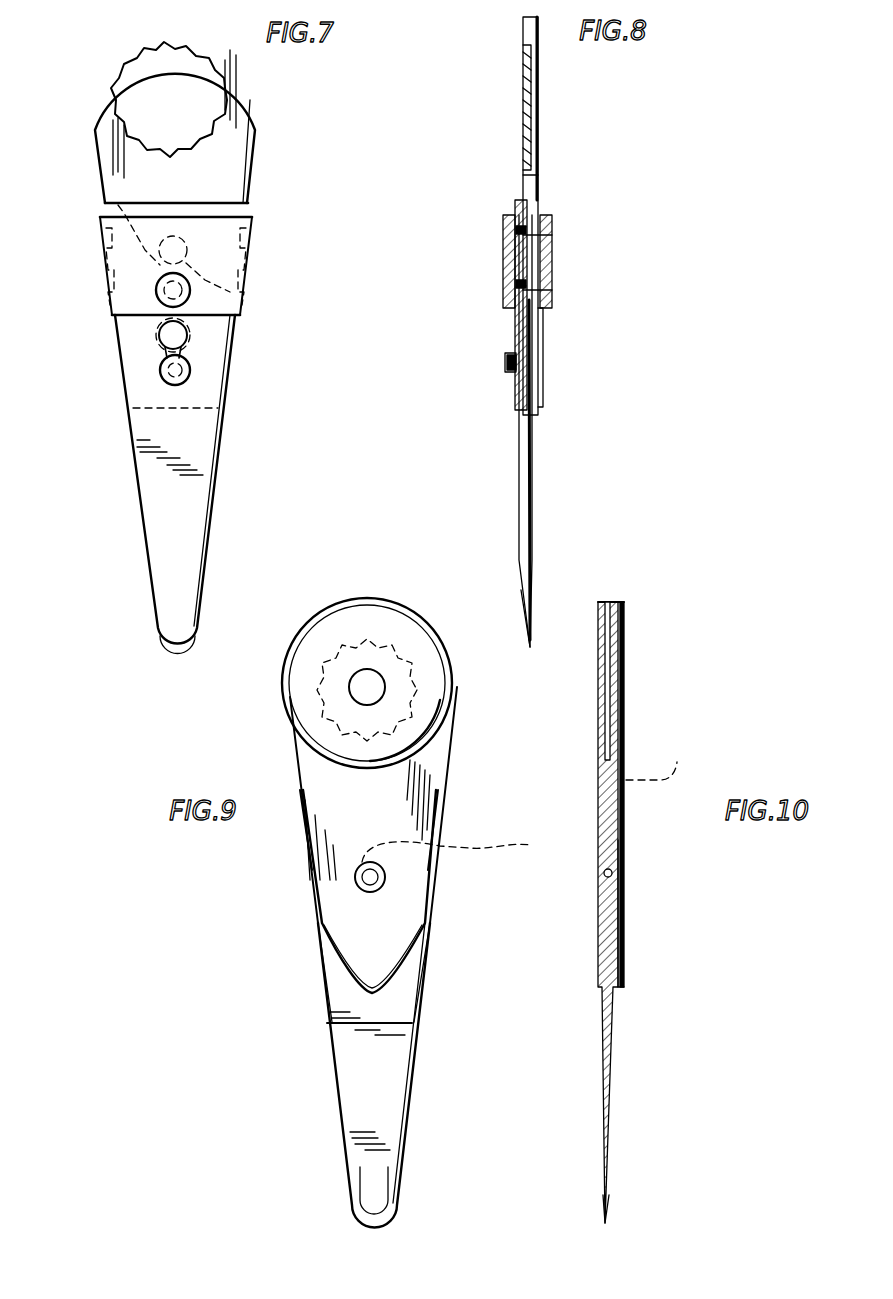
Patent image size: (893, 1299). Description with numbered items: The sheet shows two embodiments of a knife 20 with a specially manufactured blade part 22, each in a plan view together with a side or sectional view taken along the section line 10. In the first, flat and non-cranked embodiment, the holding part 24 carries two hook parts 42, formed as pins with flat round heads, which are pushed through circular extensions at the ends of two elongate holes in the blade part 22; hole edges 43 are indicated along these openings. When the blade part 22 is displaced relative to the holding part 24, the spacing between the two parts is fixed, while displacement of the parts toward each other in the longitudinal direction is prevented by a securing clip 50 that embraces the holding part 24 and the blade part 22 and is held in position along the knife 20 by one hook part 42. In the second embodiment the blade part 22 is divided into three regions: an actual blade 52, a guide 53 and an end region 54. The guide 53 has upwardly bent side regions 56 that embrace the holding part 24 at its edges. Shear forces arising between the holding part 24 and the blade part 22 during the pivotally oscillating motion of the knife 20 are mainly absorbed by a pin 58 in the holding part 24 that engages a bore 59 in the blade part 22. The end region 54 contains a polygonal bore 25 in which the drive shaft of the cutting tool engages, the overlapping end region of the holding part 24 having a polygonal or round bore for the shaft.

In FIG. 9, the section line 10- 10 is at (395, 545).
In FIG. 7, the knife 20 is at (316, 105).
In FIG. 8, the knife 20 is at (691, 99).
In FIG. 9, the knife 20 is at (226, 910).
In FIG. 10, the knife 20 is at (749, 744).
In FIG. 7, the blade part 22 is at (182, 594).
In FIG. 8, the blade part 22 is at (506, 557).
In FIG. 9, the blade part 22 is at (394, 1082).
In FIG. 10, the blade part 22 is at (614, 1127).
In FIG. 7, the holding part 24 is at (225, 184).
In FIG. 8, the holding part 24 is at (541, 175).
In FIG. 9, the holding part 24 is at (438, 758).
In FIG. 10, the holding part 24 is at (630, 637).
In FIG. 7, the polygonal bore 25 is at (140, 110).
In FIG. 8, the polygonal bore 25 is at (522, 52).
In FIG. 9, the polygonal bore 25 is at (345, 700).
In FIG. 10, the polygonal bore 25 is at (598, 660).
In FIG. 7, the hook part 42 is at (190, 296).
In FIG. 8, the hook part 42 is at (503, 279).
In FIG. 7, the fastener hole 43 is at (117, 200).
In FIG. 8, the fastener hole 43 is at (513, 214).
In FIG. 7, the securing clip 50 is at (238, 245).
In FIG. 8, the securing clip 50 is at (549, 256).
In FIG. 7, the actual blade 52 is at (177, 648).
In FIG. 8, the actual blade 52 is at (524, 634).
In FIG. 9, the actual blade 52 is at (398, 1211).
In FIG. 10, the actual blade 52 is at (614, 1200).
In FIG. 9, the guide 53 is at (312, 858).
In FIG. 10, the guide 53 is at (626, 938).
In FIG. 9, the end region 54 is at (445, 640).
In FIG. 10, the end region 54 is at (619, 611).
In FIG. 9, the side regions 56 is at (303, 824).
In FIG. 10, the side regions 56 is at (660, 760).
In FIG. 9, the pin 58 is at (368, 897).
In FIG. 10, the pin 58 is at (605, 873).
In FIG. 9, the bore 59 is at (448, 847).
In FIG. 10, the bore 59 is at (602, 882).